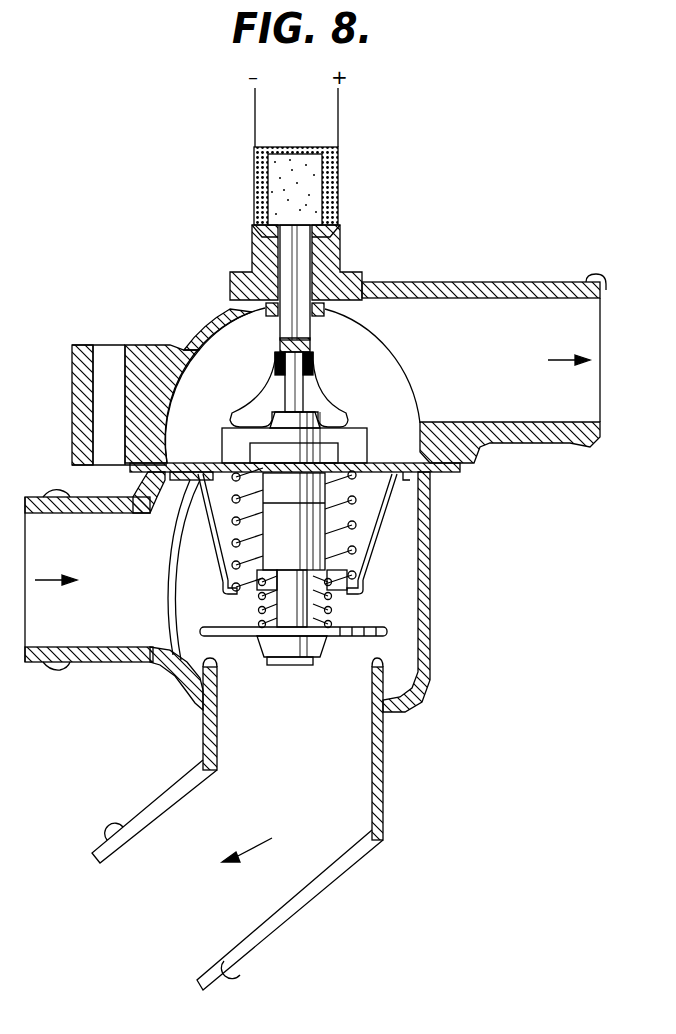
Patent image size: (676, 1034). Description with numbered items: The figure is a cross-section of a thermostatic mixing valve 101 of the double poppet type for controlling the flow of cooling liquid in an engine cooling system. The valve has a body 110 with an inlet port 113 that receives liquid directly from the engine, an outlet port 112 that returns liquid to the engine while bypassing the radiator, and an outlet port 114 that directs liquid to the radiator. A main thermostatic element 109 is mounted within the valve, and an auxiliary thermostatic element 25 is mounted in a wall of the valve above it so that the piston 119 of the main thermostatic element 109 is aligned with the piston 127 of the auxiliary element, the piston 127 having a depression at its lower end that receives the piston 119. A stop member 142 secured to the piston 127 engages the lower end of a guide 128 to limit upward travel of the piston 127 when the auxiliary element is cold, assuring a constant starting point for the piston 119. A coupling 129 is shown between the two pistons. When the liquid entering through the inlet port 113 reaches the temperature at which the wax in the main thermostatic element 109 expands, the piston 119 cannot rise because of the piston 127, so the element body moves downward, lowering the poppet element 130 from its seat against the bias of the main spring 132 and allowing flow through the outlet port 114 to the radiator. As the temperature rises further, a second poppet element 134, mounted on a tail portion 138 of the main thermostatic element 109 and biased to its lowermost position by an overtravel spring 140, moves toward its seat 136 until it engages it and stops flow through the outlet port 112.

The auxiliary thermostatic element 25 is at (346, 172).
The thermostatic mixing valve 101 is at (120, 266).
The guide 128 is at (270, 258).
The piston 127 is at (298, 258).
The stop member 142 is at (323, 316).
The coupling 129 is at (276, 372).
The piston 119 is at (300, 396).
The outlet port 114 is at (536, 440).
The inlet port 113 is at (106, 666).
The poppet element 130 is at (207, 481).
The body 110 is at (425, 570).
The outlet port 112 is at (166, 798).
The main spring 132 is at (340, 558).
The main thermostatic element 109 is at (268, 551).
The tail portion 138 is at (283, 606).
The overtravel spring 140 is at (320, 606).
The second poppet element 134 is at (200, 630).
The seat 136 is at (222, 662).